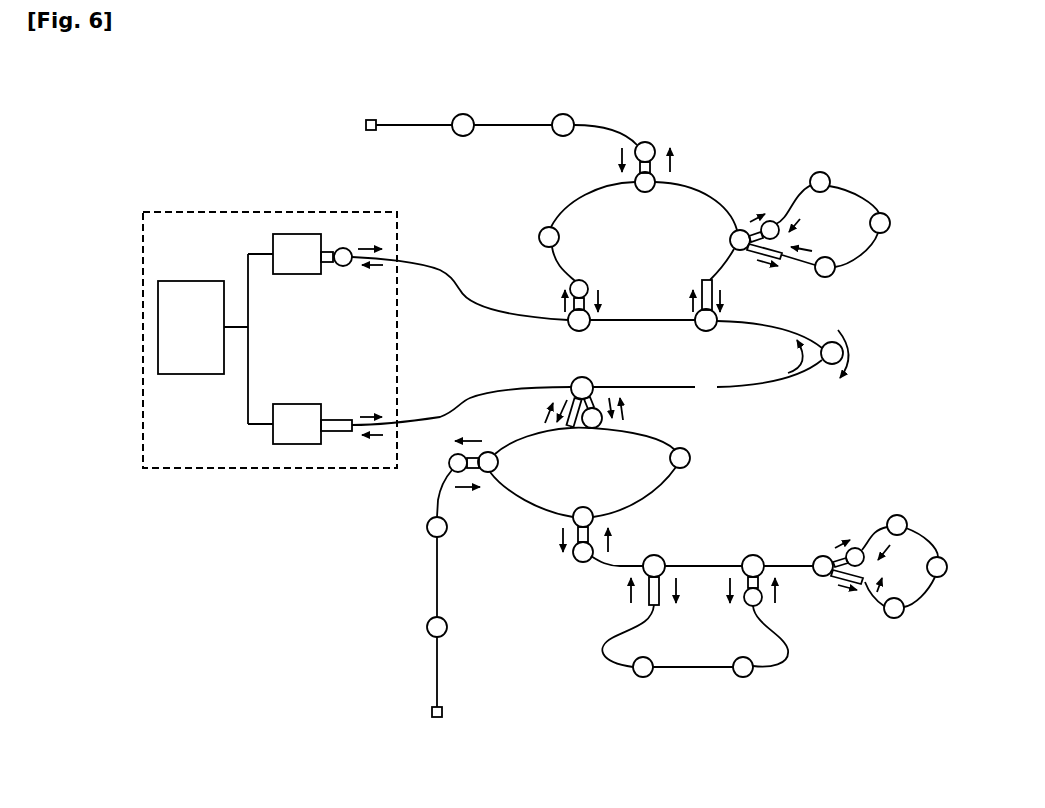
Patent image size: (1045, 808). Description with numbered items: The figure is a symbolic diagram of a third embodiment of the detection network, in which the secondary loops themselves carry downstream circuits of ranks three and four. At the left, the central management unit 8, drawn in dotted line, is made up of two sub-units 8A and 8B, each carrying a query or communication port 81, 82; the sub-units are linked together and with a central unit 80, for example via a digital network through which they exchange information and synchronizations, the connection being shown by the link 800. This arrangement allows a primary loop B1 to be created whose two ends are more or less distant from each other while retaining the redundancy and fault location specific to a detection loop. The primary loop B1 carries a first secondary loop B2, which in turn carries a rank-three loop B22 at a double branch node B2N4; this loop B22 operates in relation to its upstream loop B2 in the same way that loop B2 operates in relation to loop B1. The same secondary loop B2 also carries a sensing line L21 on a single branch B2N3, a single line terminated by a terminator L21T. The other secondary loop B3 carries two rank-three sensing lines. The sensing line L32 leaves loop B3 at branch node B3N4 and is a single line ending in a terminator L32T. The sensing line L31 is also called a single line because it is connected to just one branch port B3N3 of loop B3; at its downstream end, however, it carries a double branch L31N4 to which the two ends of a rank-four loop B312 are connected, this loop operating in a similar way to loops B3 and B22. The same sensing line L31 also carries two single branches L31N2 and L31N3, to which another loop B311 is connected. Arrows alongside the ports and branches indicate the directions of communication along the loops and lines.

The central management unit 8 is at (270, 340).
The central unit 80 is at (191, 327).
The signal line 800 is at (248, 378).
The sub-unit 8A is at (297, 254).
The sub-unit 8B is at (297, 424).
The first query or communication port 81 is at (331, 266).
The second query or communication port 82 is at (338, 420).
The sensing line L21 is at (575, 96).
The terminator L21T is at (349, 126).
The single branch B2N3 is at (645, 176).
The double branch node B2N4 is at (717, 239).
The secondary loop B2 is at (651, 260).
The rank-three loop B22 is at (888, 174).
The primary loop B1 is at (652, 361).
The secondary loop B3 is at (617, 466).
The branch node B3N4 is at (495, 464).
The branch port B3N3 is at (585, 525).
The sensing line L31 is at (828, 538).
The single branch L31N2 is at (652, 572).
The single branch L31N3 is at (748, 573).
The double branch L31N4 is at (825, 577).
The loop B311 is at (786, 680).
The rank-four loop B312 is at (940, 512).
The sensing line L32 is at (407, 500).
The terminator L32T is at (437, 722).